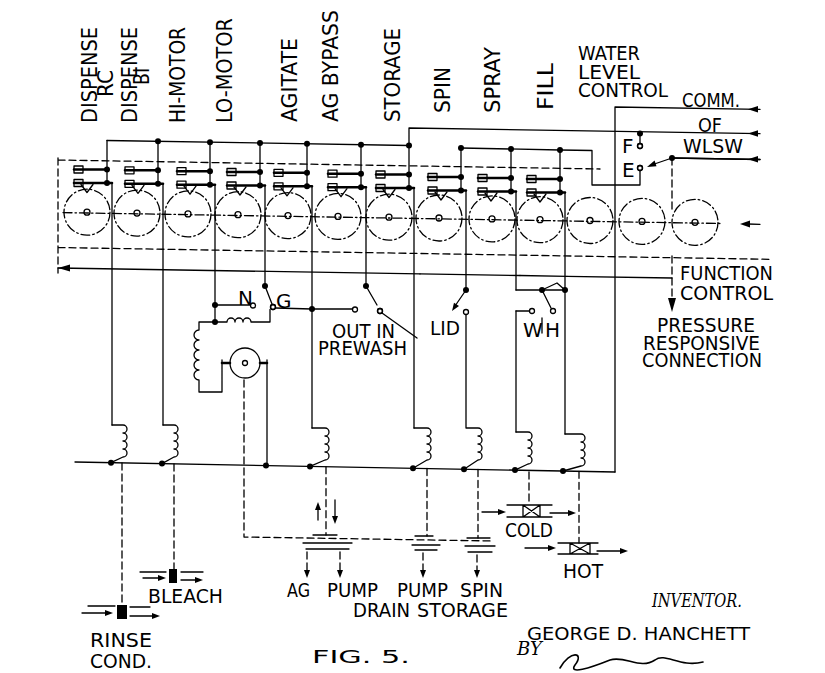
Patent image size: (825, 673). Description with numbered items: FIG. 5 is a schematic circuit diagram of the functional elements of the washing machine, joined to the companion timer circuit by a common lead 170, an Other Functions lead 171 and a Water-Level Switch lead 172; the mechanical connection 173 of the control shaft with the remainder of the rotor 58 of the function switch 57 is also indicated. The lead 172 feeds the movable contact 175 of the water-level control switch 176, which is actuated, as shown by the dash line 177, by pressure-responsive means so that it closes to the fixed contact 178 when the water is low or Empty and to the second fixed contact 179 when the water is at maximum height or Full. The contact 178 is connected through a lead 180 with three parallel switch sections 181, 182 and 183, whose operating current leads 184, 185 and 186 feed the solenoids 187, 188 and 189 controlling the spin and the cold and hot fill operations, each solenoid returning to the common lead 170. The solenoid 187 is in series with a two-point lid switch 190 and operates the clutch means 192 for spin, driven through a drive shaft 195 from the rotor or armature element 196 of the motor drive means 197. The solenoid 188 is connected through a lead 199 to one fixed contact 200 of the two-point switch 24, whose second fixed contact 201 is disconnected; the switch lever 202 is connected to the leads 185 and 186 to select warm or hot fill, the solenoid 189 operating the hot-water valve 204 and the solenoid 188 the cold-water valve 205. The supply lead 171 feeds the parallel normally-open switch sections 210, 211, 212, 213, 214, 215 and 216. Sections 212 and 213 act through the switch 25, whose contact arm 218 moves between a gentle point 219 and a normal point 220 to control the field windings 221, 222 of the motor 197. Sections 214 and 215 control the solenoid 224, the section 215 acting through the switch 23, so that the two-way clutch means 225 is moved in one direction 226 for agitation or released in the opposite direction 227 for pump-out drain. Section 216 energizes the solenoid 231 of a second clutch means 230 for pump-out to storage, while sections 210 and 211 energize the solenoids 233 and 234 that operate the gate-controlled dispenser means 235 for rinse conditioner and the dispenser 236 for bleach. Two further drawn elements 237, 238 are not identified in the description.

The function switch 57 is at (57, 212).
The rotor 58 is at (732, 196).
The common lead 170 is at (748, 109).
The Other Functions lead 171 is at (350, 143).
The Water-Level Switch lead 172 is at (742, 159).
The mechanical connection 173 is at (757, 209).
The movable contact 175 is at (674, 160).
The water-level control switch 176 is at (678, 128).
The dash line 177 is at (668, 292).
The fixed contact 178 is at (642, 170).
The second fixed switch contact 179 is at (642, 147).
The lead 180 is at (540, 147).
The switch section 181 is at (450, 183).
The switch section 182 is at (497, 187).
The switch section 183 is at (550, 187).
The operating current lead 184 is at (465, 264).
The operating current lead 185 is at (519, 269).
The operating current lead 186 is at (567, 269).
The solenoid 187 is at (498, 422).
The solenoid 188 is at (545, 423).
The solenoid 189 is at (593, 423).
The series two-point switch 190 is at (468, 291).
The clutch means 192 is at (487, 552).
The drive shaft 195 is at (243, 508).
The rotor or armature element 196 is at (240, 380).
The electric-motor drive means 197 is at (306, 395).
The lead 199 is at (523, 380).
The fixed contact 200 is at (540, 321).
The second fixed contact 201 is at (556, 311).
The switch lever 202 is at (567, 290).
The hot-water valve 204 is at (580, 542).
The cold-water valve 205 is at (532, 507).
The switch section 210 is at (95, 169).
The switch section 211 is at (147, 180).
The switch section 212 is at (200, 180).
The switch section 213 is at (245, 183).
The switch section 214 is at (292, 183).
The switch section 215 is at (352, 183).
The switch section 216 is at (398, 183).
The contact arm 218 is at (267, 286).
The point 219 is at (274, 316).
The second point 220 is at (252, 302).
The field winding 221 is at (253, 330).
The field winding 222 is at (199, 372).
The solenoid 224 is at (335, 442).
The two-way clutch means 225 is at (333, 537).
The direction 226 is at (315, 518).
The opposite direction 227 is at (338, 507).
The second clutch means 230 is at (430, 537).
The operating solenoid 231 is at (445, 422).
The solenoid 233 is at (128, 433).
The solenoid 234 is at (180, 447).
The dispenser means 235 is at (368, 285).
The dispenser 236 is at (365, 263).
The conductor 237 is at (416, 334).
The prewash switch contact 238 is at (353, 307).
The switch 23 is at (405, 316).
The switch 24 is at (513, 315).
The switch 25 is at (306, 311).